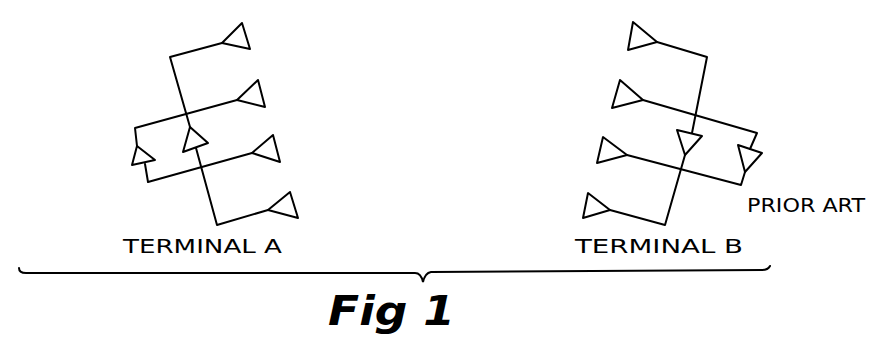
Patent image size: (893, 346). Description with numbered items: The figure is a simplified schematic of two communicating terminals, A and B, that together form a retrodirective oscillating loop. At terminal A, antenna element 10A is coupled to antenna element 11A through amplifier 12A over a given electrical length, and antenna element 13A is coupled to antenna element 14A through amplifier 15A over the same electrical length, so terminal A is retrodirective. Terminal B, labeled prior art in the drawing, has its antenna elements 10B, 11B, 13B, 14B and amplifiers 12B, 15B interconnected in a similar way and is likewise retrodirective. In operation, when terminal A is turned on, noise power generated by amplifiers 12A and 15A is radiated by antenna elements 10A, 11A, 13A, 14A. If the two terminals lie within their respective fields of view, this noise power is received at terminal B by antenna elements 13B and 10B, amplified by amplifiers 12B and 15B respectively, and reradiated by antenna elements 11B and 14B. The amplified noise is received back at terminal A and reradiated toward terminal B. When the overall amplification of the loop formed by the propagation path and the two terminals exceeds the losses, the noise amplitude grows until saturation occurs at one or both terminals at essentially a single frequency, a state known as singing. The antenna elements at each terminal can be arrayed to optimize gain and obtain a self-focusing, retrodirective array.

The antenna element 10A is at (298, 205).
The antenna element 11A is at (250, 32).
The amplifier 12A is at (200, 135).
The antenna element 13A is at (280, 150).
The antenna element 14A is at (265, 95).
The amplifier 15A is at (137, 150).
The antenna element 10B is at (647, 26).
The antenna element 11B is at (585, 200).
The amplifier 12B is at (680, 142).
The antenna element 13B is at (617, 85).
The antenna element 14B is at (602, 143).
The amplifier 15B is at (762, 158).